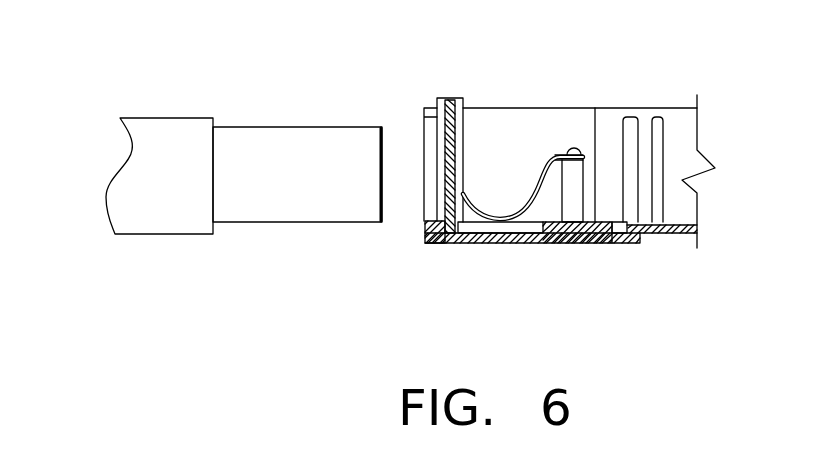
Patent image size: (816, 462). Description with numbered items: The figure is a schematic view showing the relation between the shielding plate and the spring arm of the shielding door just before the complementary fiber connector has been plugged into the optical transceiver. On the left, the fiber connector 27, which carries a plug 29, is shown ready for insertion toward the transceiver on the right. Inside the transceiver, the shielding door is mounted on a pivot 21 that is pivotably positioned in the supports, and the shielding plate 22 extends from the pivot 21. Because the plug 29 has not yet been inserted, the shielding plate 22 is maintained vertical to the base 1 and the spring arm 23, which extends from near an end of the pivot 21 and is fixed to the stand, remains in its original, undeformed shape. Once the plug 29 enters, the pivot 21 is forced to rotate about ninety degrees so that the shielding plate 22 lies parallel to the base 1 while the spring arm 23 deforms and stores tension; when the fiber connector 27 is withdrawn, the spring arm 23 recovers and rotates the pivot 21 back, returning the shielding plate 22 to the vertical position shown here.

The base 1 is at (666, 249).
The pivot 21 is at (460, 103).
The shielding plate 22 is at (445, 137).
The spring arm 23 is at (535, 192).
The fiber connector 27 is at (191, 140).
The plug 29 is at (285, 150).